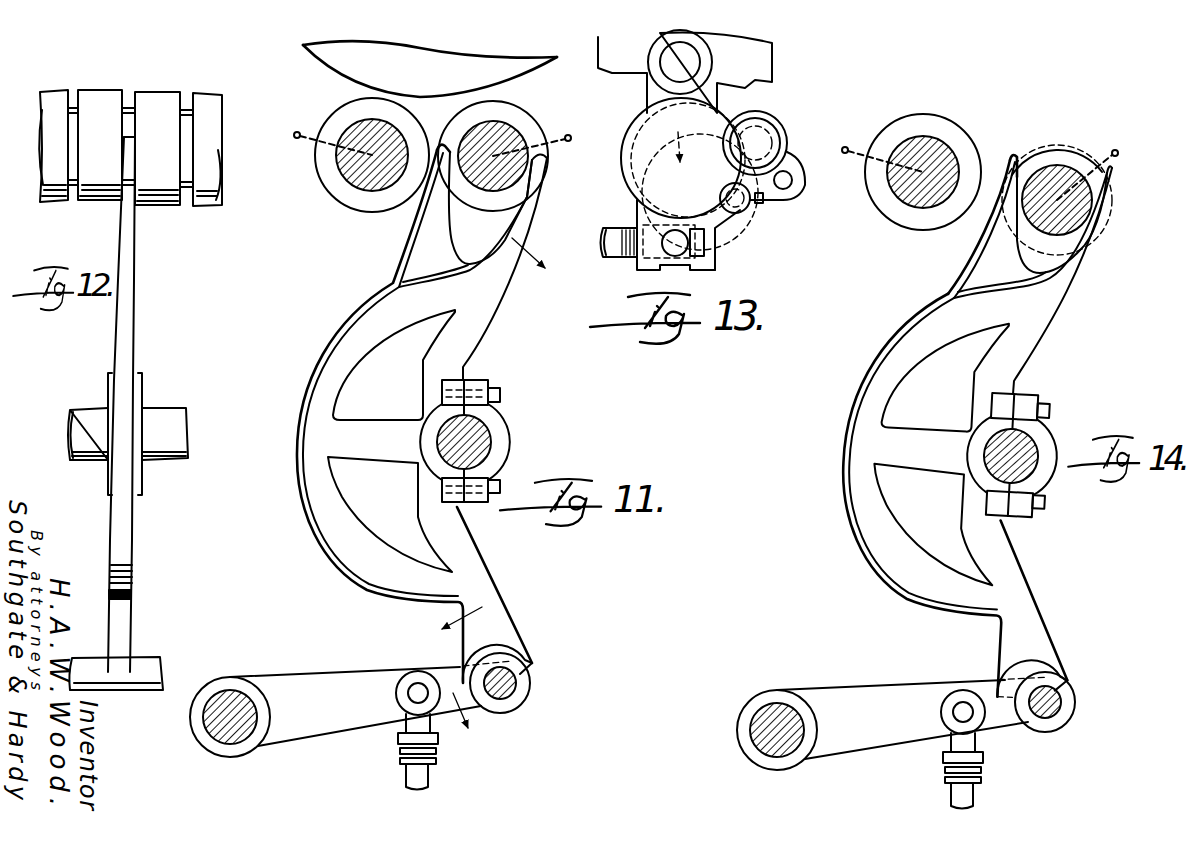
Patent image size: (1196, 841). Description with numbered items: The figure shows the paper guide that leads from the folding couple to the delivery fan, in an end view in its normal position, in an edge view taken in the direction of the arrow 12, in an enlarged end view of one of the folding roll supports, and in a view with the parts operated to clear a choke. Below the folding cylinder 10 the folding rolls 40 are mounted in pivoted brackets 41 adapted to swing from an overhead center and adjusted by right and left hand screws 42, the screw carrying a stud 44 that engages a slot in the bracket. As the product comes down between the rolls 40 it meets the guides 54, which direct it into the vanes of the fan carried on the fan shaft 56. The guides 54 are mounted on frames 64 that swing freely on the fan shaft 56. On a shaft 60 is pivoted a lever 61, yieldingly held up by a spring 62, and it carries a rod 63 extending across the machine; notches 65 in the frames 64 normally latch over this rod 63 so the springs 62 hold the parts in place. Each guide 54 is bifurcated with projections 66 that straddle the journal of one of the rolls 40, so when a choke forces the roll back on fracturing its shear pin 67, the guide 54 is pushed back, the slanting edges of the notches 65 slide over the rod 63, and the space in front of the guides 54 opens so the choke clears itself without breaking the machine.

In FIG. 11, the folding cylinder 10 is at (344, 69).
In FIG. 11, the arrow 12 is at (300, 383).
In FIG. 12, the folding rolls 40 is at (170, 86).
In FIG. 11, the folding rolls 40 is at (333, 190).
In FIG. 14, the folding rolls 40 is at (960, 132).
In FIG. 13, the pivoted brackets 41 is at (647, 118).
In FIG. 13, the right and left hand screws 42 is at (614, 236).
In FIG. 13, the stud 44 is at (677, 236).
In FIG. 12, the guides 54 is at (136, 306).
In FIG. 11, the guides 54 is at (394, 284).
In FIG. 14, the guides 54 is at (972, 266).
In FIG. 12, the fan shaft 56 is at (157, 420).
In FIG. 11, the fan shaft 56 is at (472, 437).
In FIG. 14, the fan shaft 56 is at (990, 436).
In FIG. 11, the shaft 60 is at (238, 700).
In FIG. 14, the shaft 60 is at (781, 710).
In FIG. 11, the lever 61 is at (342, 684).
In FIG. 14, the lever 61 is at (896, 690).
In FIG. 11, the spring 62 is at (400, 763).
In FIG. 14, the spring 62 is at (946, 777).
In FIG. 12, the rod 63 is at (146, 666).
In FIG. 11, the rod 63 is at (512, 697).
In FIG. 14, the rod 63 is at (1049, 720).
In FIG. 14, the frames 64 is at (1020, 587).
In FIG. 11, the notches 65 is at (512, 656).
In FIG. 14, the notches 65 is at (1032, 660).
In FIG. 11, the projections 66 is at (520, 226).
In FIG. 14, the projections 66 is at (1076, 262).
In FIG. 13, the shear pin 67 is at (745, 210).